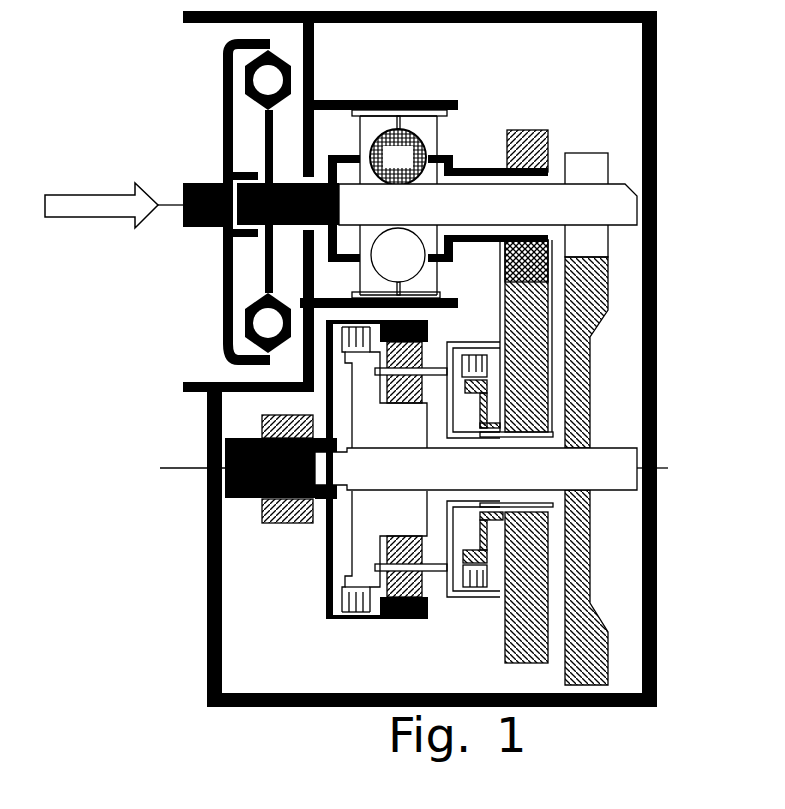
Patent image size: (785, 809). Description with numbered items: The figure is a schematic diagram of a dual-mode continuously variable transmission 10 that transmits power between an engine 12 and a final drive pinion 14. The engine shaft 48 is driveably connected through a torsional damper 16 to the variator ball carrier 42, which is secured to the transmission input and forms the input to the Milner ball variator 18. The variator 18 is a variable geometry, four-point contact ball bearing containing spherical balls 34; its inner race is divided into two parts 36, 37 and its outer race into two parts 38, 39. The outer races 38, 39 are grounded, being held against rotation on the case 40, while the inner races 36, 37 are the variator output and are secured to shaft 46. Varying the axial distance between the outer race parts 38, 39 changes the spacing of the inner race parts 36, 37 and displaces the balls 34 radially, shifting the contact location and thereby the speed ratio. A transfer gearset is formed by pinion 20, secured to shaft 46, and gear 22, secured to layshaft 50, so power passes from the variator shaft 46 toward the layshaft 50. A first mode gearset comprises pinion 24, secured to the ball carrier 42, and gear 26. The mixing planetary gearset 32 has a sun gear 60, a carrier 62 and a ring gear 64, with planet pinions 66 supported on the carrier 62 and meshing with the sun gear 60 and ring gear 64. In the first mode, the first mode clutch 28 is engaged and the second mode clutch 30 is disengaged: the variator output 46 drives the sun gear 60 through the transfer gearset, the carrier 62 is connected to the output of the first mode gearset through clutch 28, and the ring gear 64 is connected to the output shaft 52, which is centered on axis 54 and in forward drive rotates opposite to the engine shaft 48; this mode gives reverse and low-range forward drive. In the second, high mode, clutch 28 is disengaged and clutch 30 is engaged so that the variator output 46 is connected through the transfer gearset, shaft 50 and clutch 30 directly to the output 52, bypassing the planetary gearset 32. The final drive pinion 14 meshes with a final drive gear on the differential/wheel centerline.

The transmission 10 is at (188, 93).
The engine 12 is at (110, 195).
The final drive pinion 14 is at (258, 510).
The torsional damper 16 is at (265, 138).
The Milner ball variator 18 is at (378, 72).
The pinion 20 is at (608, 168).
The gear 22 is at (590, 575).
The pinion 24 is at (528, 130).
The gear 26 is at (505, 648).
The first mode clutch 28 is at (478, 358).
The second mode clutch 30 is at (352, 602).
The mixing planetary gearset 32 is at (405, 628).
The spherical balls 34 is at (398, 157).
The inner race part 36 is at (370, 242).
The inner race part 37 is at (450, 236).
The outer race part 38 is at (370, 280).
The outer race part 39 is at (422, 286).
The case 40 is at (385, 24).
The variator ball carrier 42 is at (462, 167).
The shaft 46 is at (637, 195).
The engine shaft 48 is at (200, 228).
The layshaft 50 is at (620, 460).
The output shaft 52 is at (215, 478).
The axis 54 is at (205, 456).
The sun gear 60 is at (390, 415).
The carrier 62 is at (455, 432).
The ring gear 64 is at (430, 607).
The planet pinions 66 is at (383, 403).